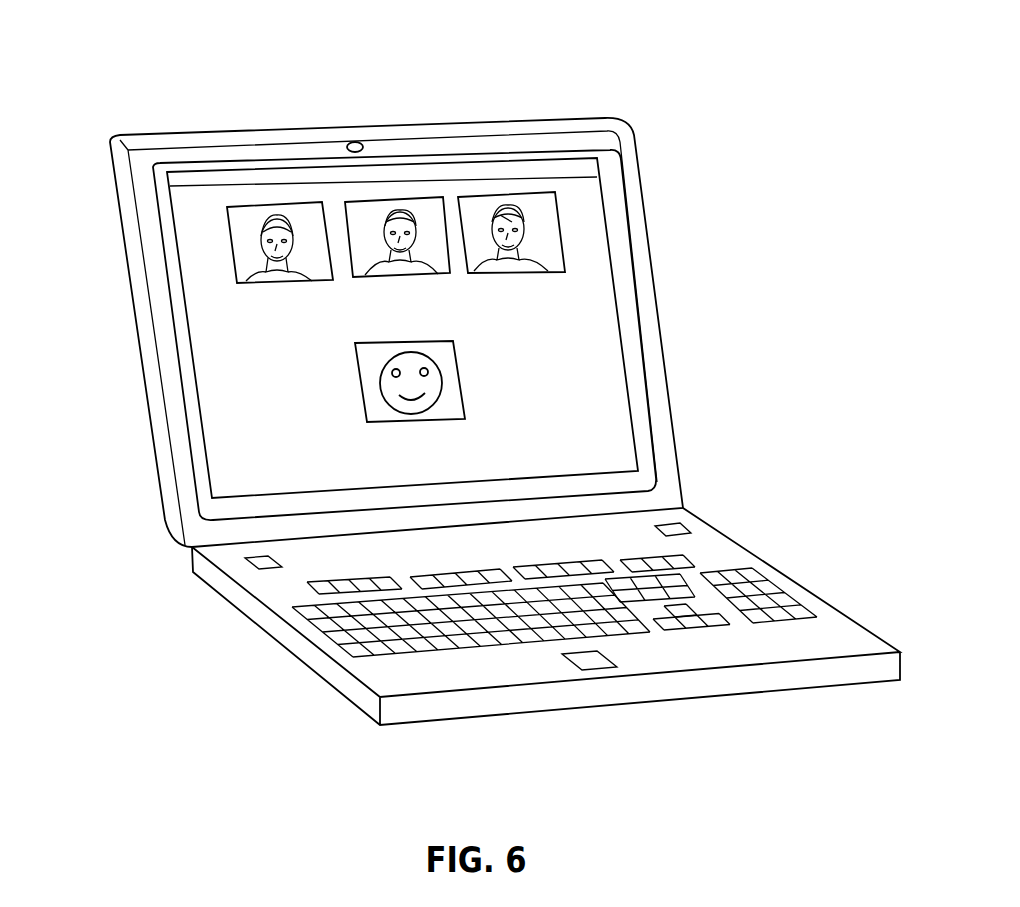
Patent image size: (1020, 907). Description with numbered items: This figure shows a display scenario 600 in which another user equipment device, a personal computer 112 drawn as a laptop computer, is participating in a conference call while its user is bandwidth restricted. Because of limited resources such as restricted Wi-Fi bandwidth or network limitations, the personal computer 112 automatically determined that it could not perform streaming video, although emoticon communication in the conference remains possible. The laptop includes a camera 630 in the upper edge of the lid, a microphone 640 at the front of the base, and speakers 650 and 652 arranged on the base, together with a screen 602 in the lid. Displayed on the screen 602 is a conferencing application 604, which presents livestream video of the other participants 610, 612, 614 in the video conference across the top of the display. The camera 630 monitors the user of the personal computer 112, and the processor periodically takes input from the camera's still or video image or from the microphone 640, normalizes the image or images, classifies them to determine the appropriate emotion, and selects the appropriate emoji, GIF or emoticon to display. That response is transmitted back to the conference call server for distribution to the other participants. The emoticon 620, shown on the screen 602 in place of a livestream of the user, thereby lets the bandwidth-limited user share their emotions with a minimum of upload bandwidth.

The computing system 600 is at (411, 23).
The personal computer 112 is at (619, 127).
The screen 602 is at (153, 171).
The conferencing application 604 is at (173, 219).
The livestream video of other participant 610 is at (257, 204).
The livestream video of other participant 612 is at (422, 197).
The livestream video of other participant 614 is at (517, 195).
The emoticon 620 is at (458, 375).
The camera 630 is at (353, 142).
The microphone 640 is at (602, 670).
The speaker 650 is at (249, 563).
The speaker 652 is at (690, 531).